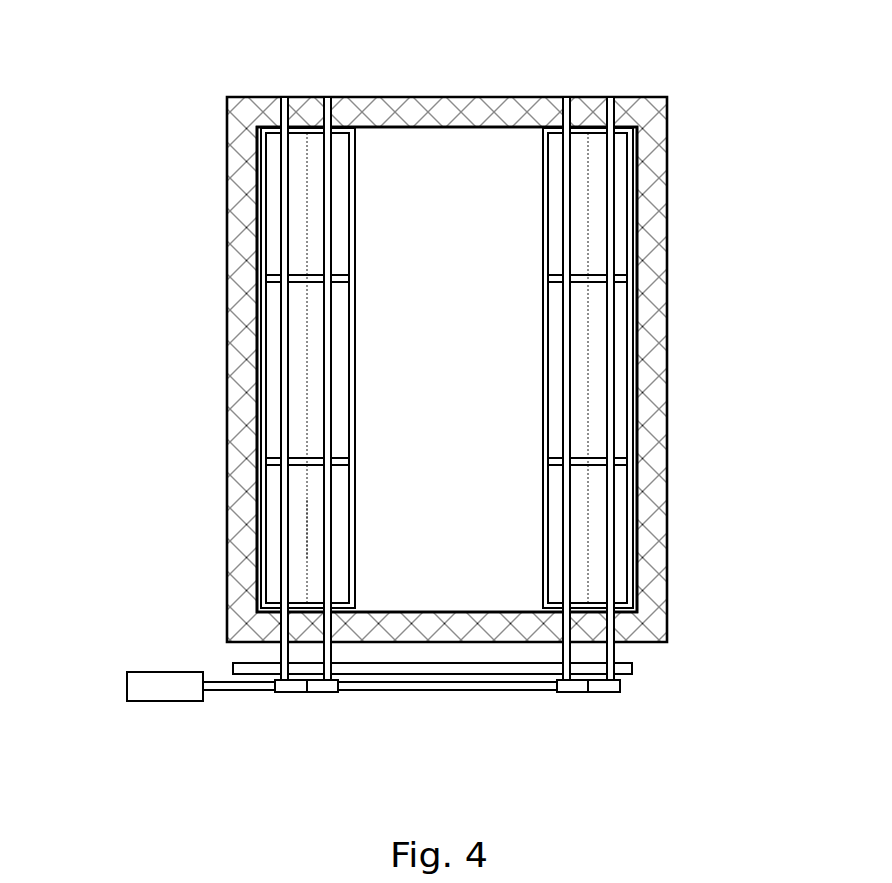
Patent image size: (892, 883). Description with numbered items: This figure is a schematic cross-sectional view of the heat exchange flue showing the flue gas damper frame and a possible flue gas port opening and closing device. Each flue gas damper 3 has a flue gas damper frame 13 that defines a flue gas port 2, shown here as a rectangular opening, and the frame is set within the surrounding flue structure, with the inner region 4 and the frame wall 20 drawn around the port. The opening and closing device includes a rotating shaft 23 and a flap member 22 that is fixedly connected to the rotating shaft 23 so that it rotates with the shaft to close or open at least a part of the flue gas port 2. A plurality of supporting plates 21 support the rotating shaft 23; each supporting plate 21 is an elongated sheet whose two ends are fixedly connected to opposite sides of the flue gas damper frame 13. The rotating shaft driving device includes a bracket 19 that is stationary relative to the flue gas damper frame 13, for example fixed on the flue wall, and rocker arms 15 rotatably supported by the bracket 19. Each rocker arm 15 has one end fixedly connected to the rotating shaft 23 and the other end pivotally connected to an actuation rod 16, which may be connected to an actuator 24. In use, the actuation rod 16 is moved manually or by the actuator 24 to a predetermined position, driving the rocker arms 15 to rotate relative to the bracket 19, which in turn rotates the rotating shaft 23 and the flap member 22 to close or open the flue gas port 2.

The flue gas port 2 is at (446, 304).
The flue gas damper 3 is at (538, 306).
The inner cavity 4 is at (477, 308).
The flue gas damper frame 13 is at (149, 368).
The rocker arm 15 is at (185, 716).
The actuation rod 16 is at (326, 756).
The bracket 19 is at (332, 612).
The insulating frame 20 is at (350, 369).
The supporting plate 21 is at (330, 337).
The flap member 22 is at (170, 368).
The rotating shaft 23 is at (323, 388).
The actuator 24 is at (118, 656).